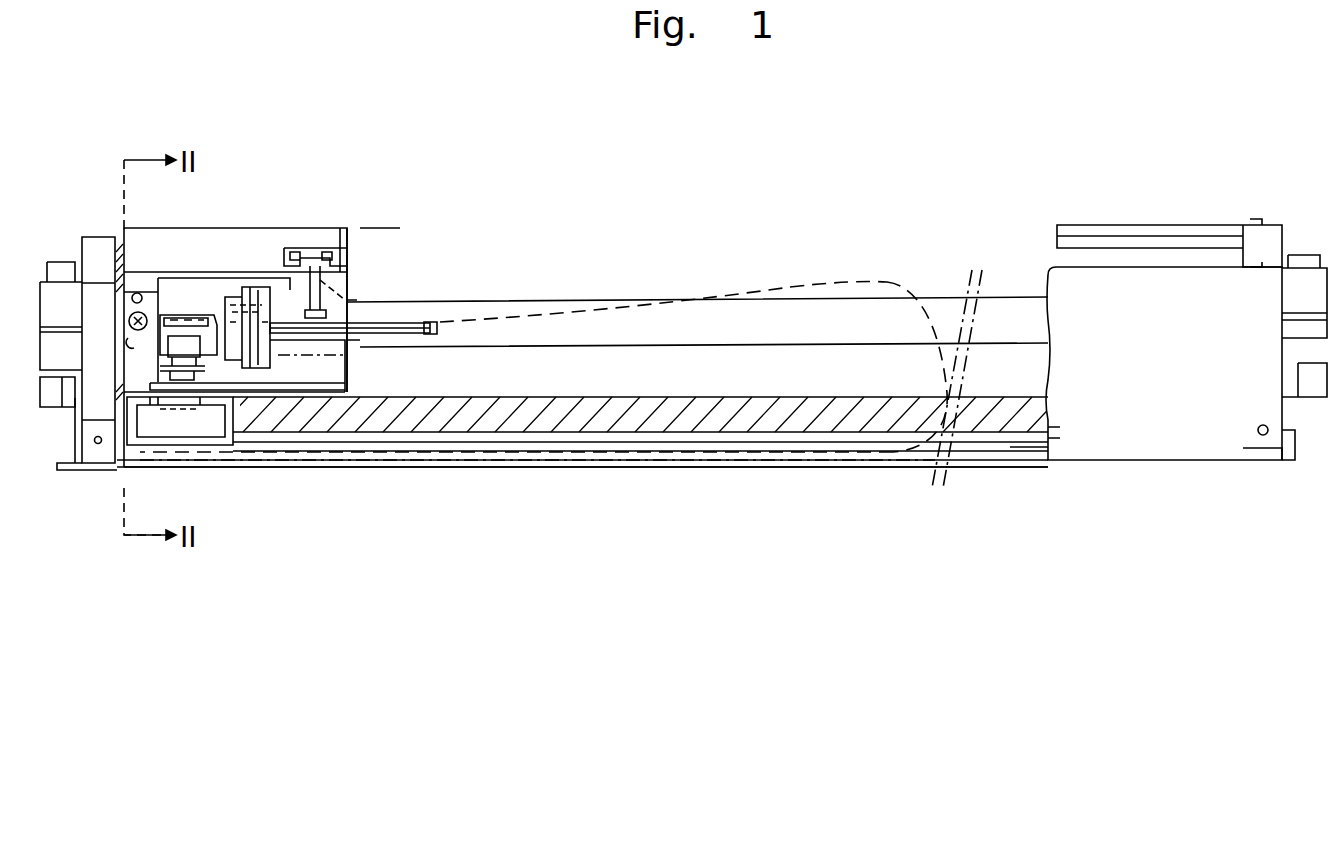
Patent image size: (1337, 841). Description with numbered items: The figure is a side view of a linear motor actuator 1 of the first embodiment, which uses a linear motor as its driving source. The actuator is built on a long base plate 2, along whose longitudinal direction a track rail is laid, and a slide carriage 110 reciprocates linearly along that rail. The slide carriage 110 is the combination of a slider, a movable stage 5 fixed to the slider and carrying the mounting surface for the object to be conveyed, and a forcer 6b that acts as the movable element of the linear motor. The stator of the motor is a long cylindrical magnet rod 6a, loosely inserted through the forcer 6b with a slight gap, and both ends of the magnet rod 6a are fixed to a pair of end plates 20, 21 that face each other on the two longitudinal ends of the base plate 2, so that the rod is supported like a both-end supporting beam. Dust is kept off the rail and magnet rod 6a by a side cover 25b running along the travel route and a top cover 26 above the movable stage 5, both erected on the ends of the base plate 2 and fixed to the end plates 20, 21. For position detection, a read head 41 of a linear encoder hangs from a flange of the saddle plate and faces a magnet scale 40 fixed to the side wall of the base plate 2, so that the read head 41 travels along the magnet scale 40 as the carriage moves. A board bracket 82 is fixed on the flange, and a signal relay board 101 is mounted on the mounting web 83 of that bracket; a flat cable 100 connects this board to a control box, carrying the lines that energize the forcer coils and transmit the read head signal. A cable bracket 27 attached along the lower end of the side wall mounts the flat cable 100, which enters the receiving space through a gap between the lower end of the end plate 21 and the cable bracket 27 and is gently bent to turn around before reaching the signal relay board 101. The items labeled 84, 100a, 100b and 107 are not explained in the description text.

The linear motor actuator 1 is at (383, 229).
The base plate 2 is at (390, 466).
The movable stage 5 is at (240, 228).
The magnet rod 6a is at (746, 298).
The forcer 6b is at (200, 292).
The end plate 20 is at (1272, 243).
The end plate 21 is at (100, 248).
The side cover 25b is at (1094, 440).
The top cover 26 is at (1110, 226).
The cable bracket 27 is at (702, 466).
The magnet scale 40 is at (200, 427).
The read head 41 is at (562, 420).
The board bracket 82 is at (310, 372).
The mounting web 83 is at (362, 322).
The shaft tip 84 is at (432, 324).
The flat cable 100 is at (846, 283).
The roller end face 100a is at (907, 290).
The roller surface 100b is at (548, 316).
The signal relay board 101 is at (293, 330).
The bracket 107 is at (74, 450).
The slide carriage 110 is at (349, 229).